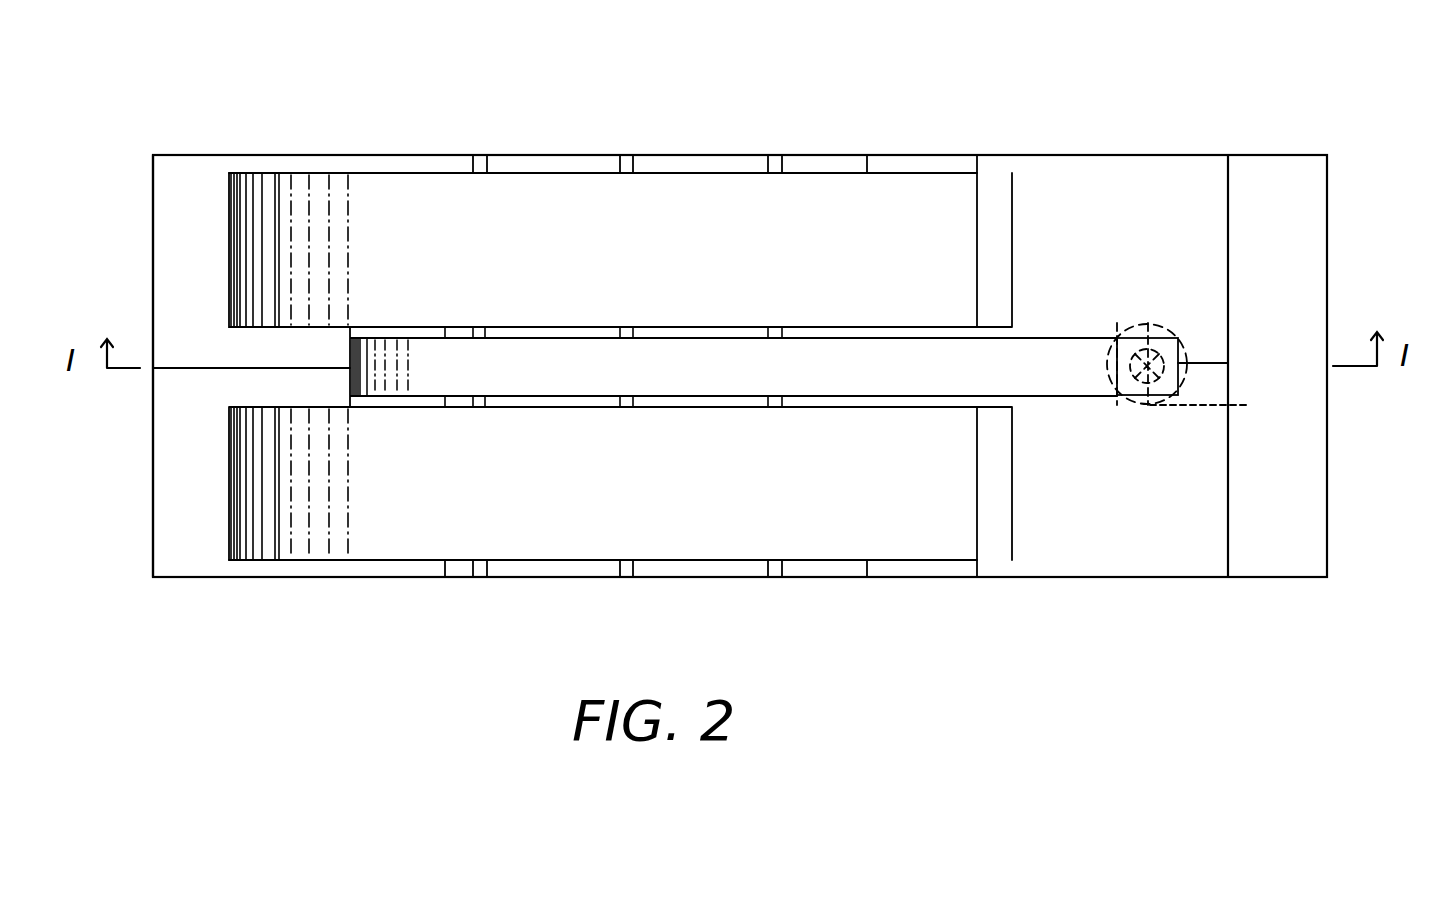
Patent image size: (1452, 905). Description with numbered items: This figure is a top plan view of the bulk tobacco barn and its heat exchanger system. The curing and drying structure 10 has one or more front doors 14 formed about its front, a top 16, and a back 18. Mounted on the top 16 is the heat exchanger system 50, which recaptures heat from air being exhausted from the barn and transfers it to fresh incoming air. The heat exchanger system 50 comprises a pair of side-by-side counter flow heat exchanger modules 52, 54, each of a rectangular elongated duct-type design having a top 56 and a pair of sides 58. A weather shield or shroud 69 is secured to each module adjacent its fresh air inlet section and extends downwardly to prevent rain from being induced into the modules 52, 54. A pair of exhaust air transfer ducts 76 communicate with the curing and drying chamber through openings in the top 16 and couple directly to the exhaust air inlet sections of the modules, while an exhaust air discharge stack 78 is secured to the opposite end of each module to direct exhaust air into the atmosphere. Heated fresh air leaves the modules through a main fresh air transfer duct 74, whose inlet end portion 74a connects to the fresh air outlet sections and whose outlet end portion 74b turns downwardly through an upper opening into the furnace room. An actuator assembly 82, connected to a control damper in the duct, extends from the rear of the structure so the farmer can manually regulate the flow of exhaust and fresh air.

The curing and drying structure 10 is at (1205, 618).
The front doors 14 is at (152, 299).
The top 16 is at (176, 476).
The back 18 is at (1327, 490).
The heat exchanger system 50 is at (786, 118).
The counter flow heat exchanger module 52 is at (458, 572).
The counter flow heat exchanger module 54 is at (673, 160).
The top 56 is at (603, 366).
The sides 58 is at (563, 171).
The weather shield or shroud 69 is at (905, 160).
The main fresh air transfer duct 74 is at (1038, 314).
The inlet end portion 74a is at (378, 380).
The outlet end portion 74b is at (1115, 330).
The exhaust air transfer duct 76 is at (297, 208).
The exhaust air discharge stack 78 is at (997, 186).
The actuator assembly 82 is at (1250, 405).